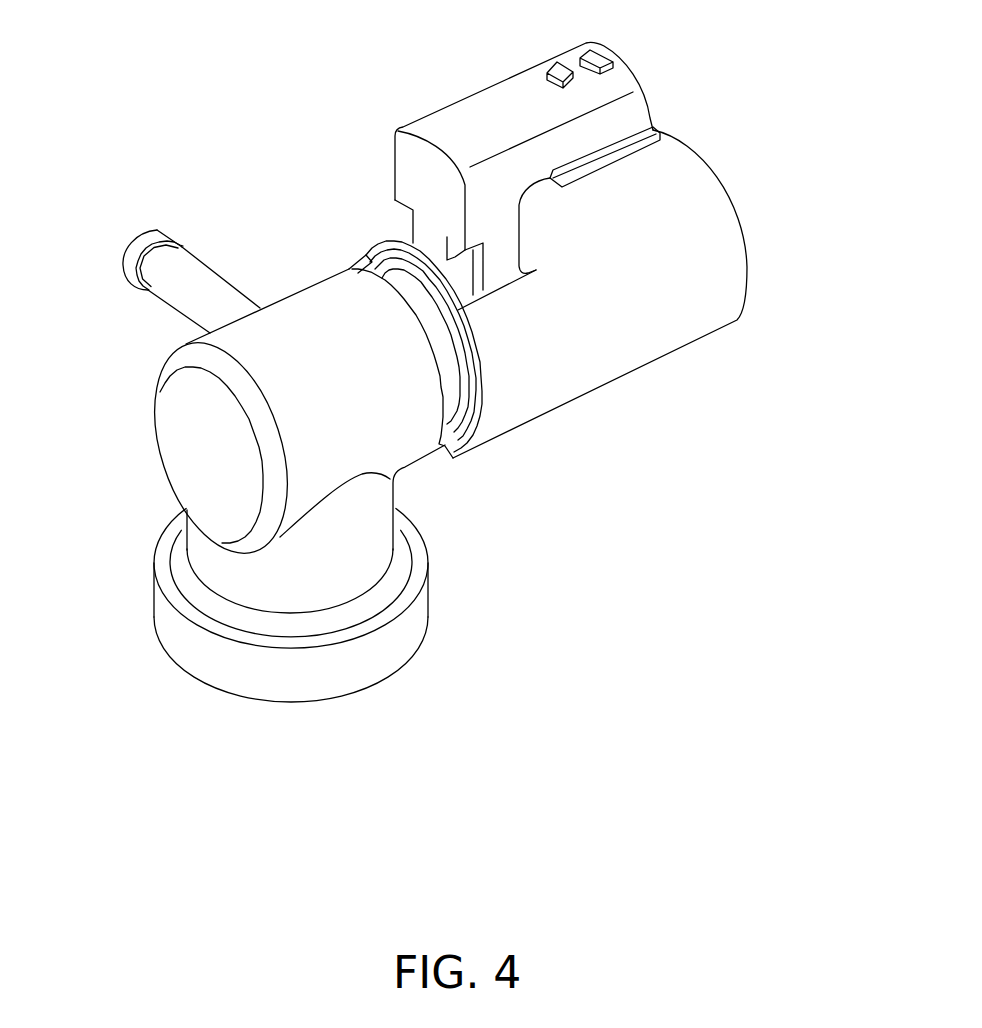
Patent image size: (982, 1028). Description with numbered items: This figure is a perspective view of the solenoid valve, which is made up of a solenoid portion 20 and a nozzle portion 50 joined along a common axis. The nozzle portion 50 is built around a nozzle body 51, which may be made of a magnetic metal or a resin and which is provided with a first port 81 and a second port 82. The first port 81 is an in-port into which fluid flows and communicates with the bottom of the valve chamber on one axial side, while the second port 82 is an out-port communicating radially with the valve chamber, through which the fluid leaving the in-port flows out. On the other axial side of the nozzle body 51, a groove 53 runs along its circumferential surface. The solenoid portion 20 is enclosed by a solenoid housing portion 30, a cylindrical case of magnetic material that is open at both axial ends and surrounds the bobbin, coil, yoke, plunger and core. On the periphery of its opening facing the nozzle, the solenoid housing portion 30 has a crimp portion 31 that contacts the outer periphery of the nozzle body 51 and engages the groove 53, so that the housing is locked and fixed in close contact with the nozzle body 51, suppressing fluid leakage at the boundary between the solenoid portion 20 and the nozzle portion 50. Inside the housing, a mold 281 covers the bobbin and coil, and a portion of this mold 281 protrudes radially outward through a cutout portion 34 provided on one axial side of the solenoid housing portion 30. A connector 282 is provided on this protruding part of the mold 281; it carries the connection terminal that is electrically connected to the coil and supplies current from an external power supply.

The solenoid portion 20 is at (695, 463).
The connector 282 is at (484, 102).
The mold 281 is at (500, 247).
The solenoid housing portion 30 is at (713, 210).
The cutout portion 34 is at (505, 286).
The crimp portion 31 is at (465, 430).
The nozzle portion 50 is at (358, 735).
The first port 81 is at (367, 525).
The nozzle body 51 is at (170, 413).
The groove 53 is at (378, 267).
The second port 82 is at (217, 285).